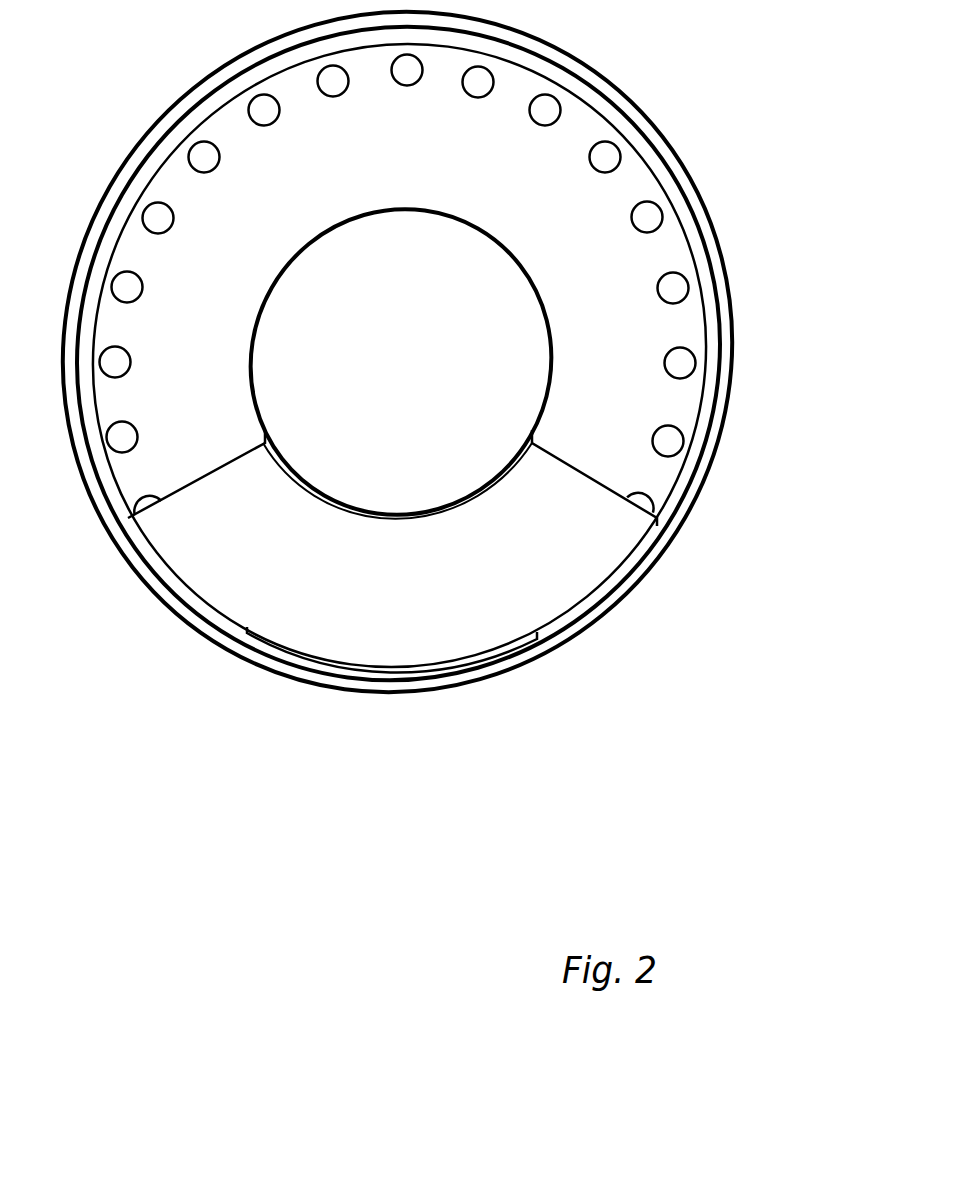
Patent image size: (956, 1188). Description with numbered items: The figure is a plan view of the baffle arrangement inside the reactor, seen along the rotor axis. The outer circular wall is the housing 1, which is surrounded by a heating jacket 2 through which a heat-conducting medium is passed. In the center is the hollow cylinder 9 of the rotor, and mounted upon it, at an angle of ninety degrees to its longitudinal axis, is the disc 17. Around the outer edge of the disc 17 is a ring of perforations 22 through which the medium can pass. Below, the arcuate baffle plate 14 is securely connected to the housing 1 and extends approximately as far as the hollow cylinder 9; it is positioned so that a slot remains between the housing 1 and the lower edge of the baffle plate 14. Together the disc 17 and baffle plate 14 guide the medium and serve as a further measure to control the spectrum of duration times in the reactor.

The housing 1 is at (713, 388).
The heating jacket 2 is at (719, 436).
The hollow cylinder 9 is at (532, 292).
The baffle plate 14 is at (618, 545).
The disc 17 is at (627, 185).
The perforations 22 is at (648, 215).